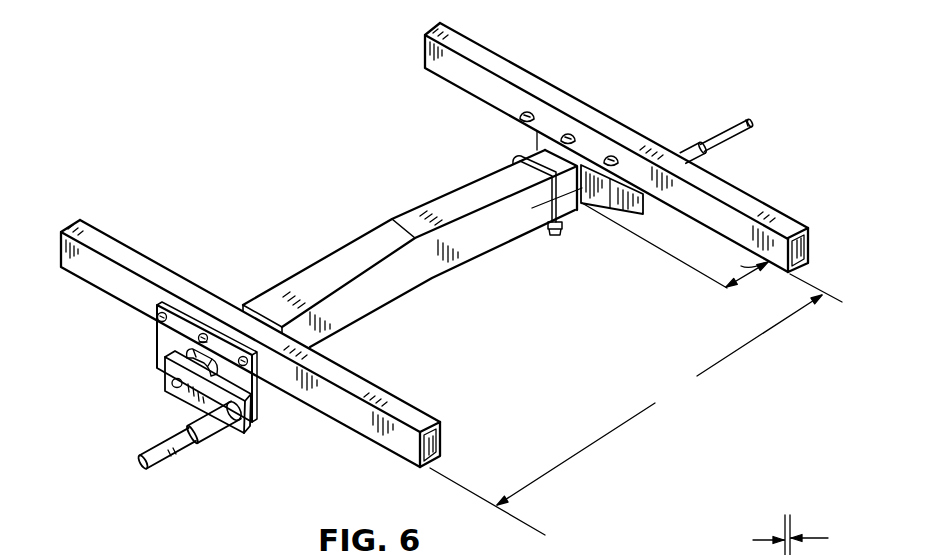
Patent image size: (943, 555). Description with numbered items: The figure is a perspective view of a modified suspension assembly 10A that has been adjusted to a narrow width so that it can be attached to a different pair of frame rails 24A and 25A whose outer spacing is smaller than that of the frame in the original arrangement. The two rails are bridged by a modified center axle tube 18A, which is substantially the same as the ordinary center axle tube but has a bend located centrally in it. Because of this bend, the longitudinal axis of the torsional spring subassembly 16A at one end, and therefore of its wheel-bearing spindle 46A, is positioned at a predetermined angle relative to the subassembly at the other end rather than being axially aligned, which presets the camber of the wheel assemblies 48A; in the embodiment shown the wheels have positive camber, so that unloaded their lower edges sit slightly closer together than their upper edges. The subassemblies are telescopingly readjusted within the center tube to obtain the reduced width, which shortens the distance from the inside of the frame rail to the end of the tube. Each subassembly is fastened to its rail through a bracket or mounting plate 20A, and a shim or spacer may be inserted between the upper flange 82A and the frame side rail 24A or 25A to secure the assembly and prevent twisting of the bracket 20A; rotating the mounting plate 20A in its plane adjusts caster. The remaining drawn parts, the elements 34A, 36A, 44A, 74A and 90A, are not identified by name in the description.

The suspension assembly 10A is at (802, 126).
The torsional spring subassembly 16A is at (598, 197).
The modified center axle tube 18A is at (323, 246).
The bracket 20A is at (262, 394).
The frame side rail 24A is at (112, 245).
The frame rail 25A is at (500, 52).
The bolt 34A is at (203, 333).
The hole 36A is at (176, 390).
The block 44A is at (190, 396).
The wheel-bearing spindle 46A is at (171, 448).
The wheel assembly 48A is at (811, 535).
The U-bolt 74A is at (514, 161).
The upper flange 82A is at (167, 337).
The backing plate 90A is at (189, 339).